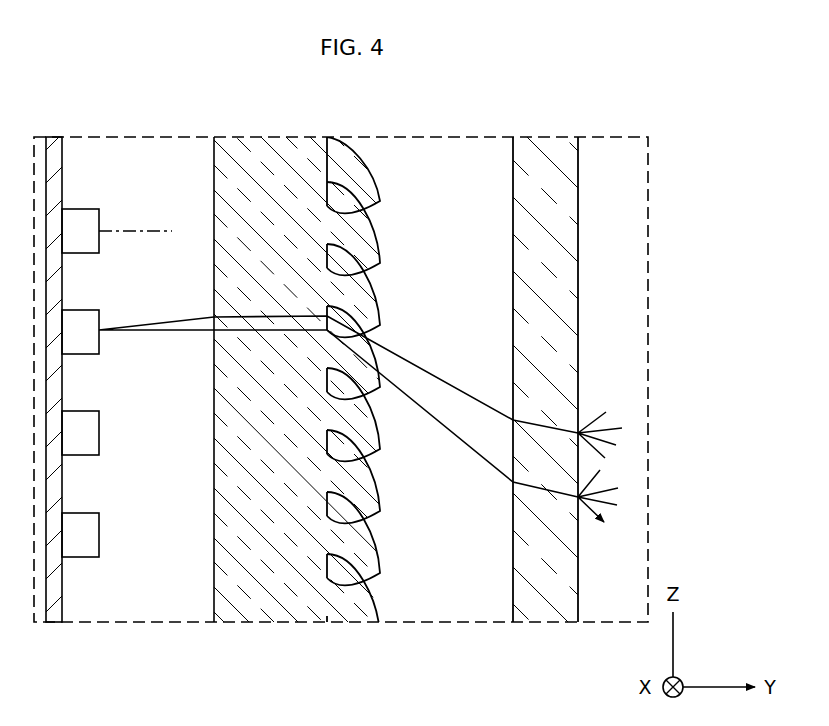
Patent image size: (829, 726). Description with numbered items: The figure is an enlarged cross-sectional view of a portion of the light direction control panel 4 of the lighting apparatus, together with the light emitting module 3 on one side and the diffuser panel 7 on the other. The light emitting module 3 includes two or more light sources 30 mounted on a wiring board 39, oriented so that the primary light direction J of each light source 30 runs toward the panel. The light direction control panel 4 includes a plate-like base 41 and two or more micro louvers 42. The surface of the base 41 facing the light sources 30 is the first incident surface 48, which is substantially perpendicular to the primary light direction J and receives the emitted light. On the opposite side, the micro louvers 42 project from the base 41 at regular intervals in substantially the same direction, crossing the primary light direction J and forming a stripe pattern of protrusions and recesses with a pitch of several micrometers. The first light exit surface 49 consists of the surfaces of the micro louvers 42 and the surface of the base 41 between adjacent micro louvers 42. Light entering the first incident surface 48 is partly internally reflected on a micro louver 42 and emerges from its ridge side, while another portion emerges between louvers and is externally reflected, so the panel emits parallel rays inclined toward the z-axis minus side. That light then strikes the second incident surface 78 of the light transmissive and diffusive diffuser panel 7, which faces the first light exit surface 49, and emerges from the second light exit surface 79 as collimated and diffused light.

The light emitting module 3 is at (94, 378).
The light source 30 is at (92, 533).
The wiring board 39 is at (56, 271).
The primary light direction J is at (128, 228).
The light direction control panel 4 is at (294, 363).
The base 41 is at (294, 363).
The micro louver 42 is at (368, 243).
The first incident surface 48 is at (213, 470).
The first light exit surface 49 is at (350, 514).
The diffuser panel 7 is at (544, 359).
The second incident surface 78 is at (512, 333).
The second light exit surface 79 is at (580, 320).